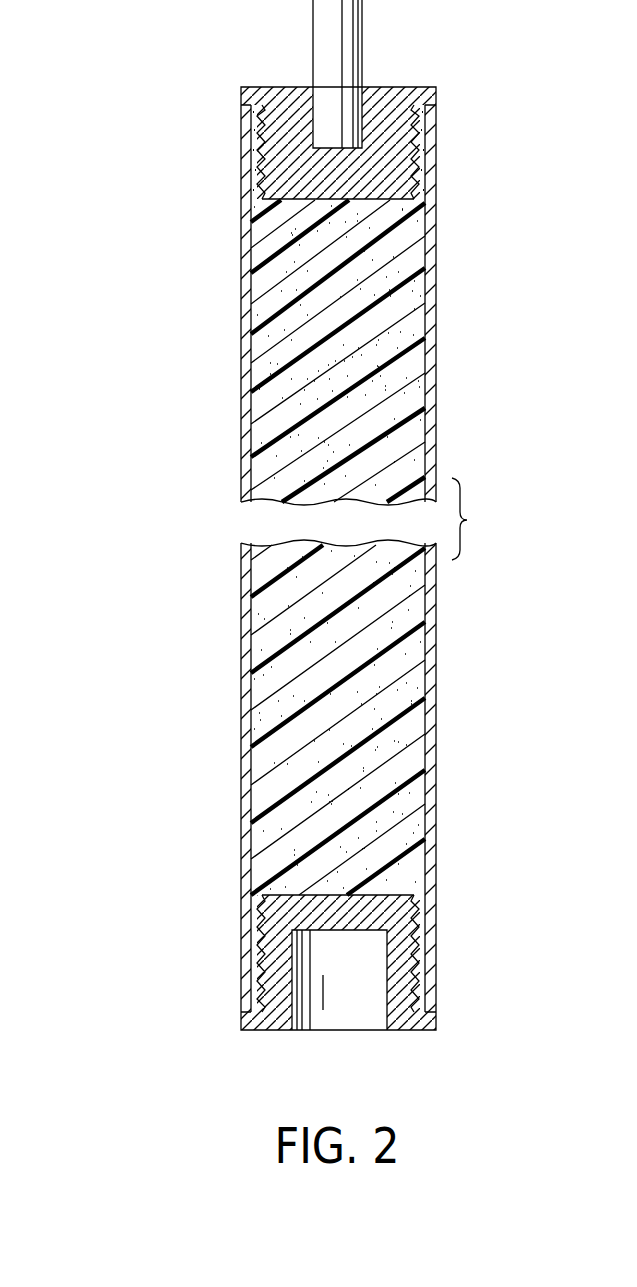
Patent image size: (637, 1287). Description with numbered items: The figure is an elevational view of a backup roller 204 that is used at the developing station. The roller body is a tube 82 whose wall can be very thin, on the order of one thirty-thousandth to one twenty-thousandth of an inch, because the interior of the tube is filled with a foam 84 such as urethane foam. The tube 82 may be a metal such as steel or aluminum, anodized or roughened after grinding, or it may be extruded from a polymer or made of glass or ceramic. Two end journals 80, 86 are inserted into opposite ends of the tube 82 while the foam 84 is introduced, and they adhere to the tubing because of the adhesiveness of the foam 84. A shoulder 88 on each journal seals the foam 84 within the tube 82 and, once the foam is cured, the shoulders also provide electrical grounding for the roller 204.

The backup roller 204 is at (193, 249).
The shoulder 88 is at (436, 92).
The end journal 80 is at (395, 163).
The tube 82 is at (425, 260).
The foam 84 is at (387, 352).
The end journal 86 is at (423, 1007).